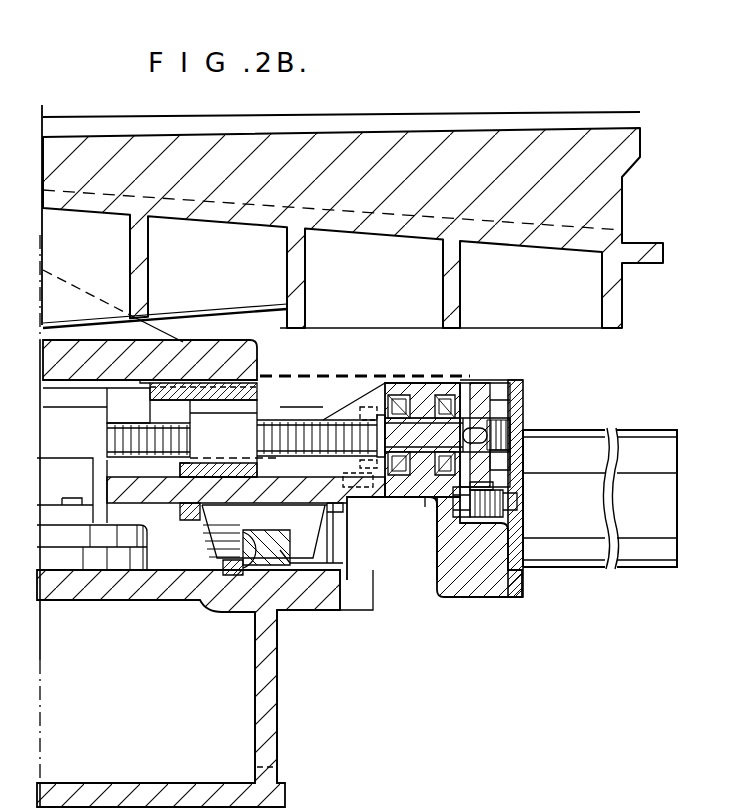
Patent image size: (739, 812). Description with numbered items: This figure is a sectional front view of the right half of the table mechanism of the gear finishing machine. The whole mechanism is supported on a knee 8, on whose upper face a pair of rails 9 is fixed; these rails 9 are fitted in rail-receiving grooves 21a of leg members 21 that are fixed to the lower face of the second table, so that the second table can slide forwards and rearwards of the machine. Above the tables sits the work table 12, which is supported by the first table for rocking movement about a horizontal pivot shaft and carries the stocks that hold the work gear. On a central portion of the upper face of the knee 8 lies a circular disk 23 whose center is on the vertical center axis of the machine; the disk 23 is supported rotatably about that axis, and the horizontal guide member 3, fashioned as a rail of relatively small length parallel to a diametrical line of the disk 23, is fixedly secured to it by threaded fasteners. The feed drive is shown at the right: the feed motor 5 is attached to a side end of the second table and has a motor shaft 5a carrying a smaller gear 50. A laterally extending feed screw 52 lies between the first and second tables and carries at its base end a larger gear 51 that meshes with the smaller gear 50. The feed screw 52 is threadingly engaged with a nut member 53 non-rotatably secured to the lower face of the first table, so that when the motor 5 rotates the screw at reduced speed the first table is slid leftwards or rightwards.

The work table 12 is at (575, 178).
The nut member 53 is at (220, 420).
The feed screw 52 is at (307, 428).
The larger gear 51 is at (480, 390).
The horizontal guide member 3 is at (55, 470).
The motor shaft 5a is at (513, 503).
The leg member 21 is at (310, 525).
The rail-receiving groove 21a is at (247, 580).
The circular disk 23 is at (67, 560).
The rails 9 is at (280, 570).
The knee 8 is at (267, 713).
The smaller gear 50 is at (482, 522).
The feed motor 5 is at (640, 545).